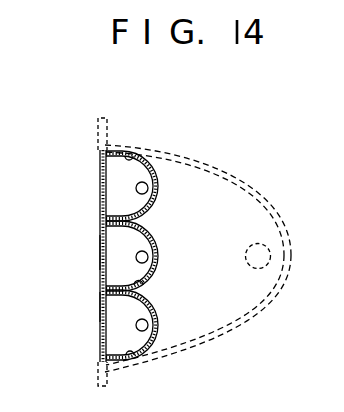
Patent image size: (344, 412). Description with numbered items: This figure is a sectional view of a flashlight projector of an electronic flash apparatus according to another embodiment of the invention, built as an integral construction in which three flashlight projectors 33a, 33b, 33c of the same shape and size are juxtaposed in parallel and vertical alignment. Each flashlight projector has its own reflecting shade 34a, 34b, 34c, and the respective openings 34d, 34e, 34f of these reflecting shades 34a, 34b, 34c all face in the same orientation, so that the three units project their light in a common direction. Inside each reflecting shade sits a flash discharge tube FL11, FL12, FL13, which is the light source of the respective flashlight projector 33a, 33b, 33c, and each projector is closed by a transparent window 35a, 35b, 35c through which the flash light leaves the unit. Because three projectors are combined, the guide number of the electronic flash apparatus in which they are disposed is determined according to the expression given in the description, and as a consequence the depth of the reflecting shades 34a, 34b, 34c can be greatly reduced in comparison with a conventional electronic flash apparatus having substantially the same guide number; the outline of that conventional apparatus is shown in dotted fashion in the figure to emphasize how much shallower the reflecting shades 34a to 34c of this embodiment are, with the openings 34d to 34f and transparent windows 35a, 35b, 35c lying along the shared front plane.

The flashlight projector 33a is at (164, 177).
The flashlight projector 33b is at (160, 228).
The flashlight projector 33c is at (162, 312).
The reflecting shade 34a is at (131, 156).
The reflecting shade 34b is at (143, 282).
The reflecting shade 34c is at (133, 354).
The opening 34d is at (99, 179).
The opening 34e is at (99, 251).
The opening 34f is at (99, 307).
The transparent window 35a is at (99, 156).
The transparent window 35b is at (99, 232).
The transparent window 35c is at (99, 338).
The flash discharge tube FL11 is at (136, 188).
The flash discharge tube FL12 is at (136, 257).
The flash discharge tube FL13 is at (136, 325).